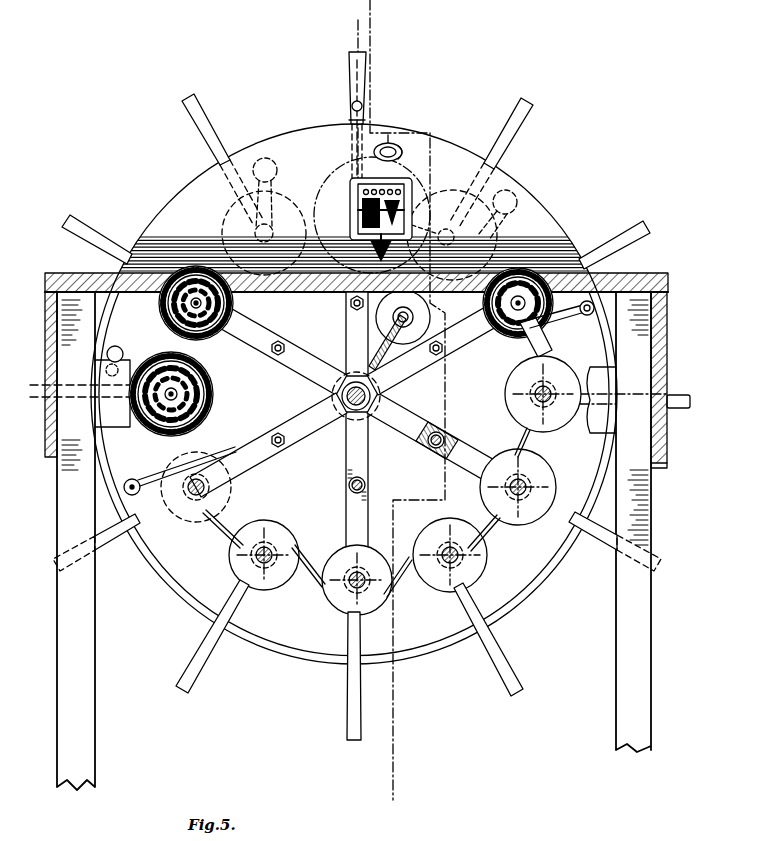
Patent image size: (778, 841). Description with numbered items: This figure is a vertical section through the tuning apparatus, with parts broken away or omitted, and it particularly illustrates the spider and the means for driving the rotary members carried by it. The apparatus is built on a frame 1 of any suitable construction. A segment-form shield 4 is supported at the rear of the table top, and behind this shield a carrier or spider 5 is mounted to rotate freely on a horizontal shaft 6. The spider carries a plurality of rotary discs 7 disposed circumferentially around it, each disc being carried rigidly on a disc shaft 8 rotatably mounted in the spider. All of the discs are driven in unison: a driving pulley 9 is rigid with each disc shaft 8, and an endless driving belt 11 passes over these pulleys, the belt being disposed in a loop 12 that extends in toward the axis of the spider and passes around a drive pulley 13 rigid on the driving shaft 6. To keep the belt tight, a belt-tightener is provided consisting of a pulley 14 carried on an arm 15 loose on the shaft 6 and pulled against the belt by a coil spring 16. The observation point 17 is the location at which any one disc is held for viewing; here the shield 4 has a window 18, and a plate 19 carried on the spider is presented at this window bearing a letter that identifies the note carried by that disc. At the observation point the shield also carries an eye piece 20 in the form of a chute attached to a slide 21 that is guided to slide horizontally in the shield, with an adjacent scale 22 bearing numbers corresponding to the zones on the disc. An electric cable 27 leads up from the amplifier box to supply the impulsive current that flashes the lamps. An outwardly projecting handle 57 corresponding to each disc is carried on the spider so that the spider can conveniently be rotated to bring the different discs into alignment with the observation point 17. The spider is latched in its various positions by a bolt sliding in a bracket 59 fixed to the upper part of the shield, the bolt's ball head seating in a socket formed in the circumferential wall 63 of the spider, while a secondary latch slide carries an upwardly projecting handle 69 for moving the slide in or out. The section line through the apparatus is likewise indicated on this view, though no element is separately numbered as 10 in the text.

The frame 1 is at (653, 487).
The shield 4 is at (525, 197).
The spider 5 is at (296, 419).
The horizontal shaft 6 is at (350, 412).
The discs 7 is at (238, 309).
The disc shafts 8 is at (532, 395).
The driving pulleys 9 is at (510, 408).
The section line 10 is at (368, 33).
The endless driving belt 11 is at (448, 355).
The loop 12 is at (270, 343).
The drive pulley 13 is at (377, 437).
The belt-tightener pulley 14 is at (428, 315).
The arm 15 is at (378, 345).
The coil spring 16 is at (407, 372).
The observation point 17 is at (402, 150).
The window 18 is at (380, 148).
The plate 19 is at (605, 285).
The eye piece 20 is at (418, 213).
The slide 21 is at (408, 230).
The scale 22 is at (406, 184).
The electric cable 27 is at (372, 215).
The handle 57 is at (510, 135).
The bracket 59 is at (352, 118).
The circumferential wall 63 is at (540, 594).
The handle 69 is at (352, 104).